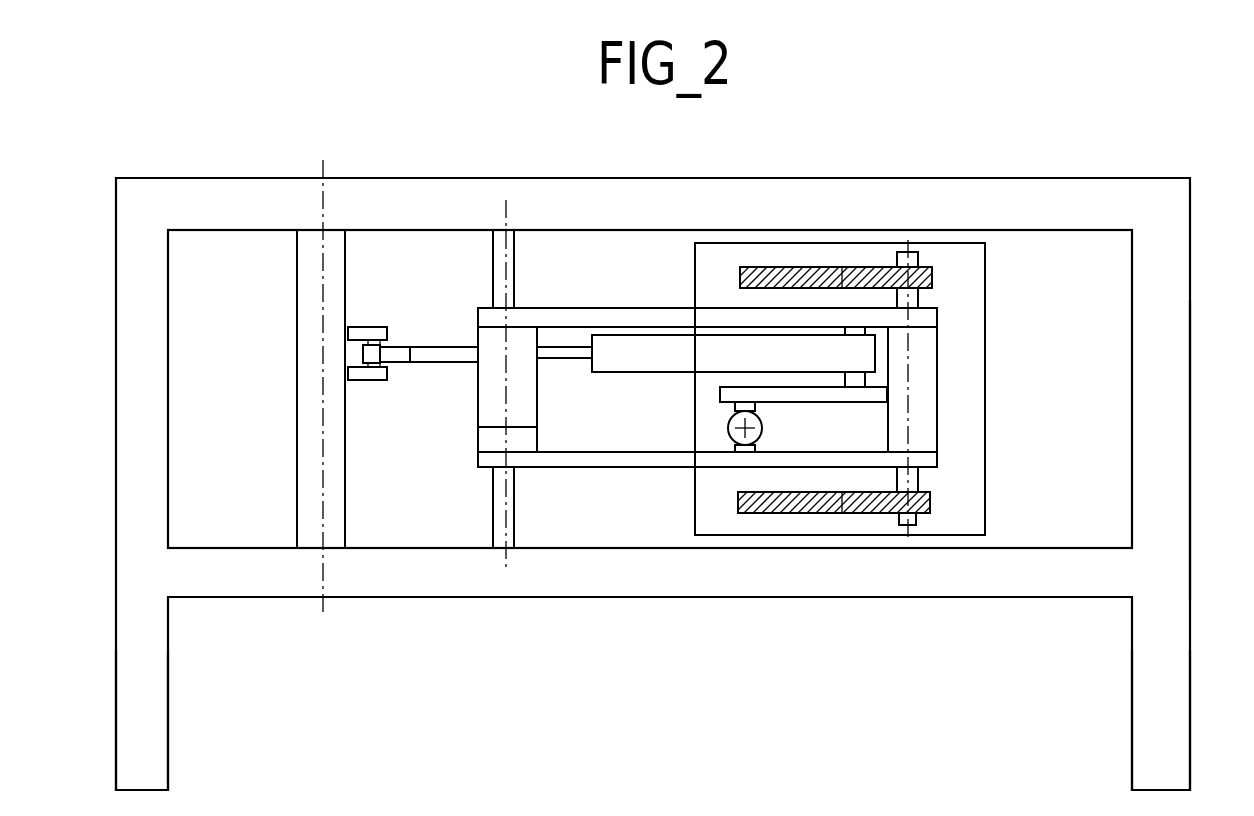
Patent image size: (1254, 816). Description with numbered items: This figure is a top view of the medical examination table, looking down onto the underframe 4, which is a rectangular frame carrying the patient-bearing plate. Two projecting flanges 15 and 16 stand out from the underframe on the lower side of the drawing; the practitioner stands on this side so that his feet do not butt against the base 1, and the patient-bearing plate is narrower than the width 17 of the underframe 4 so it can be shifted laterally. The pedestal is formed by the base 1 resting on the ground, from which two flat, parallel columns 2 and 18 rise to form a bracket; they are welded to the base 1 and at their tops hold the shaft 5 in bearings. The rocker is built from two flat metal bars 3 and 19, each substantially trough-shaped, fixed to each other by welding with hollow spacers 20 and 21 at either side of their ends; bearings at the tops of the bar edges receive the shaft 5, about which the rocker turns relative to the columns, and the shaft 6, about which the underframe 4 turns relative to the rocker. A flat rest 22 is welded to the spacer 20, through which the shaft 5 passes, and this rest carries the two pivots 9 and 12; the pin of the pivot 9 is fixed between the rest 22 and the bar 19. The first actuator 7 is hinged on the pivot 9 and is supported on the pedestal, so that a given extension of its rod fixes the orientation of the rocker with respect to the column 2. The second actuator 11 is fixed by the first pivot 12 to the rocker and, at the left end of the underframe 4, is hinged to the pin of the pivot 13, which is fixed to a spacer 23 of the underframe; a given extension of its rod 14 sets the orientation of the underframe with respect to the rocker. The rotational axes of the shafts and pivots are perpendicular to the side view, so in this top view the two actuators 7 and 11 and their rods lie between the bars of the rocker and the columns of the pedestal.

The base 1 is at (965, 522).
The column 2 is at (775, 508).
The rocker 3 is at (655, 460).
The underframe 4 is at (1168, 448).
The shaft 5 is at (900, 524).
The shaft 6 is at (499, 230).
The first actuator 7 is at (760, 423).
The pivot 9 is at (730, 405).
The actuator 11 is at (619, 358).
The first pivot 12 is at (868, 383).
The pivot 13 is at (372, 327).
The rod 14 is at (447, 356).
The projecting flange 15 is at (1176, 698).
The projecting flange 16 is at (160, 720).
The width 17 is at (102, 797).
The column 18 is at (783, 268).
The flat metal bar 19 is at (587, 317).
The hollow spacer 20 is at (937, 405).
The hollow spacer 21 is at (487, 413).
The flat rest 22 is at (830, 395).
The spacer 23 is at (340, 246).